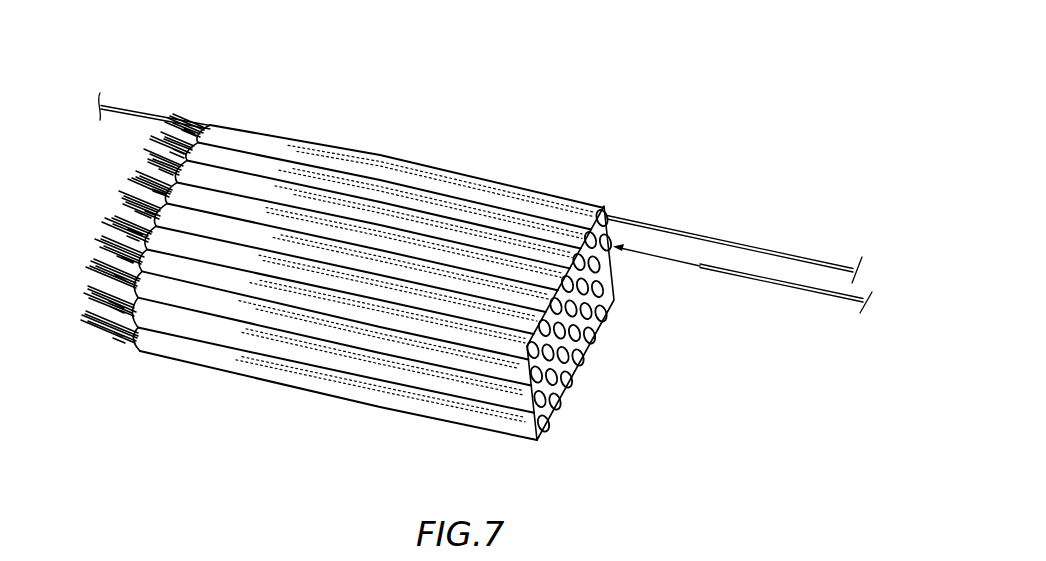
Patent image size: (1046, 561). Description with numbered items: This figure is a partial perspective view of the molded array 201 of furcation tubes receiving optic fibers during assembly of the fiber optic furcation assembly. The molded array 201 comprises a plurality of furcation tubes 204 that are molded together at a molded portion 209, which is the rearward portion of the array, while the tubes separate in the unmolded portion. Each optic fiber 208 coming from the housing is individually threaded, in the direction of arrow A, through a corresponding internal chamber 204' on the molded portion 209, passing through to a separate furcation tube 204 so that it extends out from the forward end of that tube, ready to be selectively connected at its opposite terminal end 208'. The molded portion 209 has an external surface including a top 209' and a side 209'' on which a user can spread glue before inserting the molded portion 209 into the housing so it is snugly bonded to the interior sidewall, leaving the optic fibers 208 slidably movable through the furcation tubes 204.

The molded array 201 is at (528, 149).
The furcation tube 204 is at (400, 140).
The internal chamber 204' is at (595, 320).
The optic fiber 208 is at (739, 222).
The terminal end 208' is at (140, 86).
The molded portion 209 is at (338, 419).
The top 209' is at (379, 160).
The side 209'' is at (333, 348).